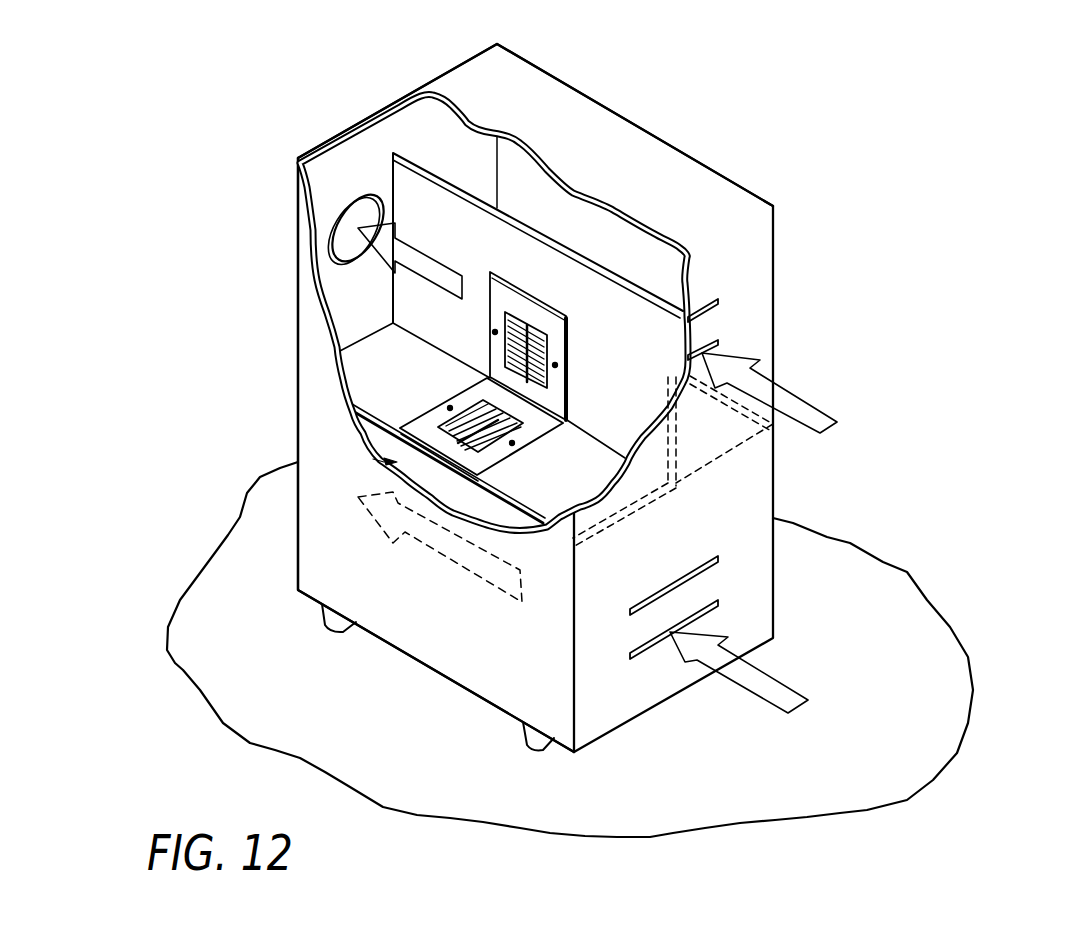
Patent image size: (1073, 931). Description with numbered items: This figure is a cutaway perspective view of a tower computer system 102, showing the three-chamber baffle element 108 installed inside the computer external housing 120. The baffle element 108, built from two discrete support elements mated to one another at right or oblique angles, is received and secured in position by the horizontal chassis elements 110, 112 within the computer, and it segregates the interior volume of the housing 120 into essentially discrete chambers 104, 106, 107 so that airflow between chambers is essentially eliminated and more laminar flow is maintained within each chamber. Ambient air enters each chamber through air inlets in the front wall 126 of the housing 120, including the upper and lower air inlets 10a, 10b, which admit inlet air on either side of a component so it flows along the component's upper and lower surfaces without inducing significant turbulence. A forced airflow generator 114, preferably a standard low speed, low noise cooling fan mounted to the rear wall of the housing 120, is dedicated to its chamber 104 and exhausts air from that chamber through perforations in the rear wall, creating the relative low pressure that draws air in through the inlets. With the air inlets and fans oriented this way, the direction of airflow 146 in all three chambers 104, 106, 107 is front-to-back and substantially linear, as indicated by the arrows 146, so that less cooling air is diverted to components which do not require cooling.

The tower/minitower computer system 102 is at (912, 188).
The chamber 104 is at (345, 173).
The chamber 106 is at (722, 422).
The chamber 107 is at (375, 458).
The baffle element 108 is at (363, 430).
The horizontal chassis element 110 is at (367, 388).
The horizontal chassis element 112 is at (621, 312).
The forced airflow generator 114 is at (369, 193).
The external housing 120 is at (675, 147).
The front wall 126 is at (753, 600).
The air flowpath 146 is at (387, 257).
The upper air inlet 10a is at (693, 310).
The lower air inlet 10b is at (700, 350).